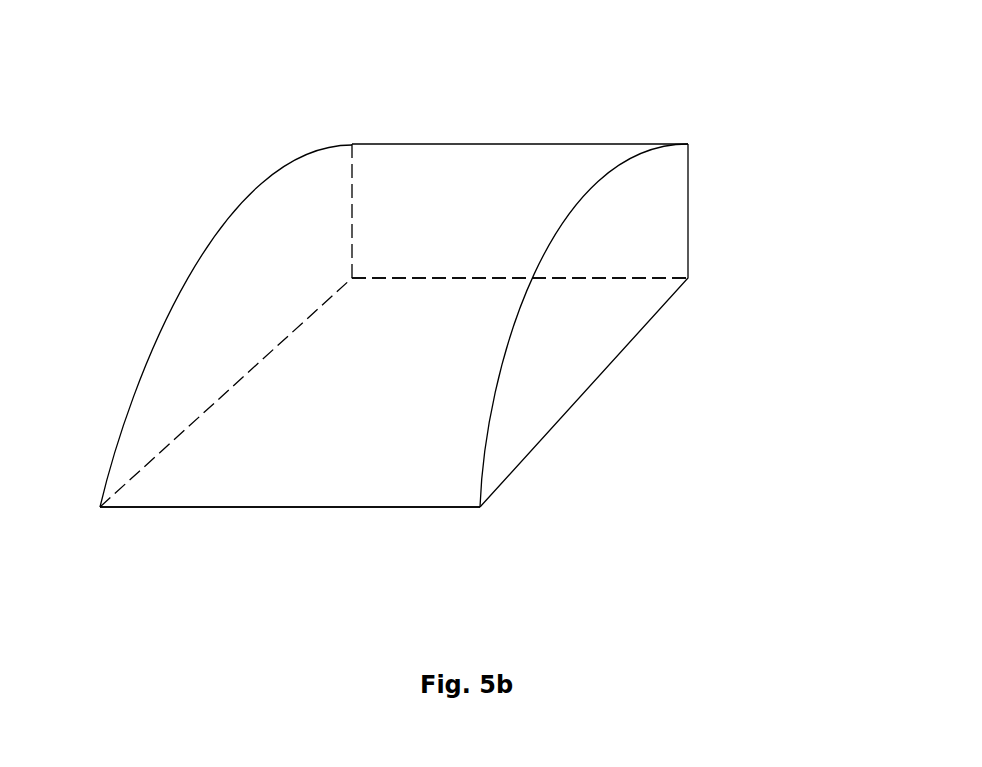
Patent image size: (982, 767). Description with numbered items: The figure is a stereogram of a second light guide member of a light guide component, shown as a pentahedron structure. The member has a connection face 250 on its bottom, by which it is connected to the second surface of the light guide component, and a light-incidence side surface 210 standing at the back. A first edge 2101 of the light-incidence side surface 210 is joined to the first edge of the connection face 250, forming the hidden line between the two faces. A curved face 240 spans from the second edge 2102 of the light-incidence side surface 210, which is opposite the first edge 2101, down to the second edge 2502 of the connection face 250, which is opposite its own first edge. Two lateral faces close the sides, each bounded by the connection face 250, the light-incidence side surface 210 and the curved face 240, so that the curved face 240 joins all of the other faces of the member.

The curved face 240 is at (222, 215).
The second edge of the light-incidence side surface 2102 is at (462, 144).
The light-incidence side surface 210 is at (660, 208).
The first edge of the light-incidence side surface 2101 is at (588, 278).
The second edge of the connection face 2502 is at (237, 507).
The connection face 250 is at (342, 478).